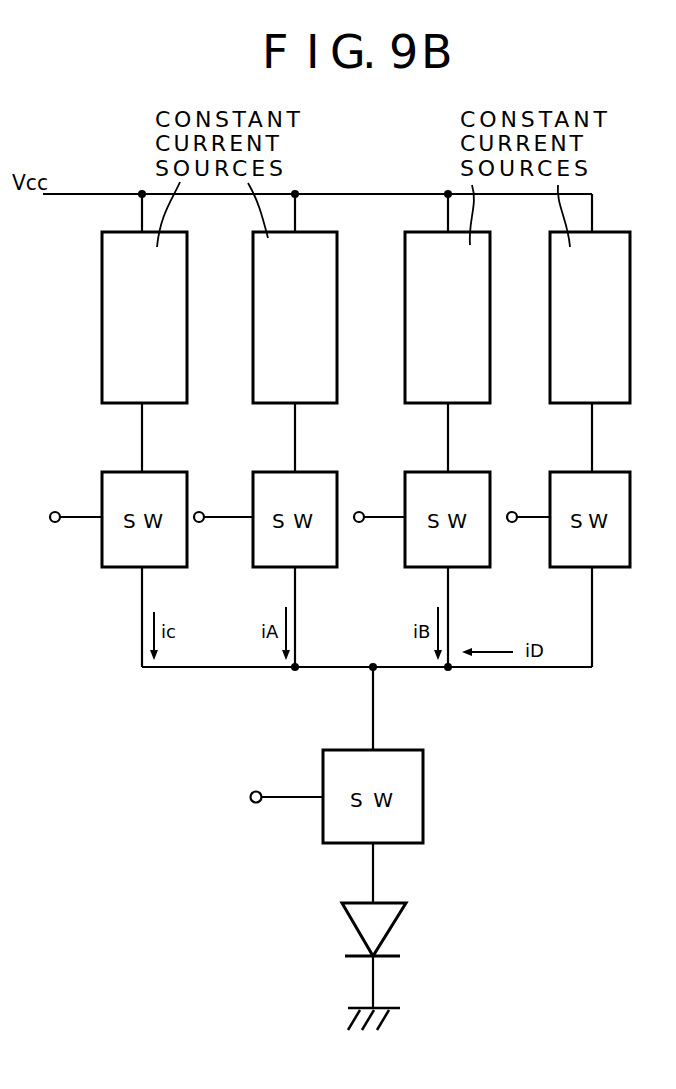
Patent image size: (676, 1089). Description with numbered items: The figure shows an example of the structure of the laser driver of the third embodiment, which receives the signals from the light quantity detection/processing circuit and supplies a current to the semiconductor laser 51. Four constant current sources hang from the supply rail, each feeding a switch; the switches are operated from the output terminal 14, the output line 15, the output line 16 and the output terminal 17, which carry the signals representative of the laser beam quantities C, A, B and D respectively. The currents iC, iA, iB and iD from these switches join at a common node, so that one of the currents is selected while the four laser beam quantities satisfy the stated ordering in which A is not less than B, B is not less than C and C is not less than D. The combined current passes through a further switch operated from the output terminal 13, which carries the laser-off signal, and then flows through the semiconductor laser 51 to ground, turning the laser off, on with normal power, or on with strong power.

The output terminal 13 is at (253, 803).
The output line 14 is at (53, 523).
The output line 15 is at (200, 523).
The output line 16 is at (359, 523).
The output terminal 17 is at (512, 523).
The semiconductor laser 51 is at (382, 925).